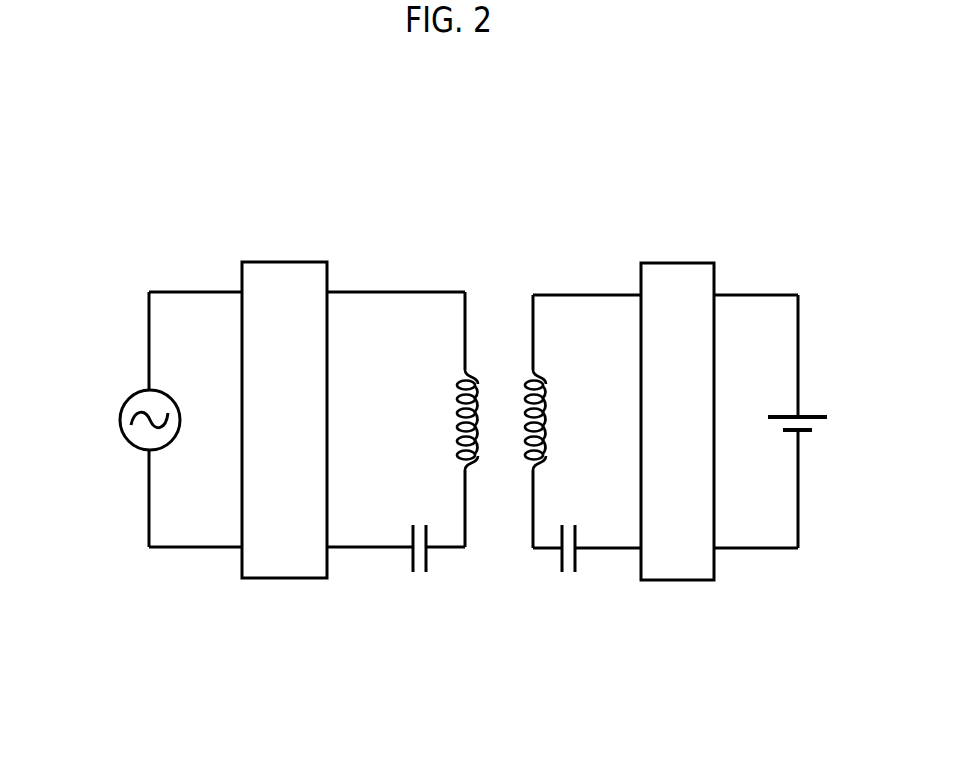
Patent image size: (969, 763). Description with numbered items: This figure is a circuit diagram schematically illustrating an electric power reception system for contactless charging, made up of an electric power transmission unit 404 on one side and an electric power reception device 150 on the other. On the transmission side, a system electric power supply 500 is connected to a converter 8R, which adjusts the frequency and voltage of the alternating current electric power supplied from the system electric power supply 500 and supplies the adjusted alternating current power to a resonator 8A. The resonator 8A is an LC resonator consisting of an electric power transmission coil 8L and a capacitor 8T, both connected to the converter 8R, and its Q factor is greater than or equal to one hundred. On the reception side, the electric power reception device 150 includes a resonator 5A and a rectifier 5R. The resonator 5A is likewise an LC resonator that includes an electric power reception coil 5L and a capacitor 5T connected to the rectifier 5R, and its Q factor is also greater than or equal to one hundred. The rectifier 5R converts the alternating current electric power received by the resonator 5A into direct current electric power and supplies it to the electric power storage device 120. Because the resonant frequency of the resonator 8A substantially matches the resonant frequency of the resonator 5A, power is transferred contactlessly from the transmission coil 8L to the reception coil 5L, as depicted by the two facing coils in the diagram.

The system electric power supply 500 is at (118, 418).
The electric power transmission unit 404 is at (448, 686).
The converter 8R is at (292, 578).
The resonator 8A is at (480, 646).
The electric power transmission coil 8L is at (458, 458).
The capacitor 8T is at (413, 558).
The electric power reception device 150 is at (703, 687).
The resonator 5A is at (612, 646).
The electric power reception coil 5L is at (543, 455).
The capacitor 5T is at (575, 558).
The rectifier 5R is at (677, 580).
The electric power storage device 120 is at (802, 433).